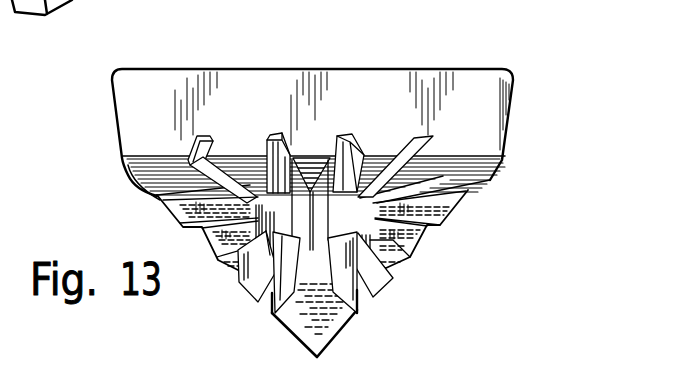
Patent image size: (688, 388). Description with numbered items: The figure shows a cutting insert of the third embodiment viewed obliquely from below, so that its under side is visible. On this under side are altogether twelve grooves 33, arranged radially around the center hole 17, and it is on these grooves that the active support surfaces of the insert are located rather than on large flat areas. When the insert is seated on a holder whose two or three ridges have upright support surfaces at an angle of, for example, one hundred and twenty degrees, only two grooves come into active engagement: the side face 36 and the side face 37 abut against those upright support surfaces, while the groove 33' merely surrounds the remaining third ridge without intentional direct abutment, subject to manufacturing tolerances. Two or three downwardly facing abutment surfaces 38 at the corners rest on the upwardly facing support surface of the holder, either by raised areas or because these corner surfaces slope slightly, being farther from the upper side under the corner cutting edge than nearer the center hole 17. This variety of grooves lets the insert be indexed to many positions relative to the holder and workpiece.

The center hole 17 is at (346, 212).
The grooves 33 is at (310, 108).
The groove 33' is at (465, 229).
The side face 36 is at (198, 163).
The side face 37 is at (272, 314).
The downwardly facing abutment surfaces 38 is at (443, 177).